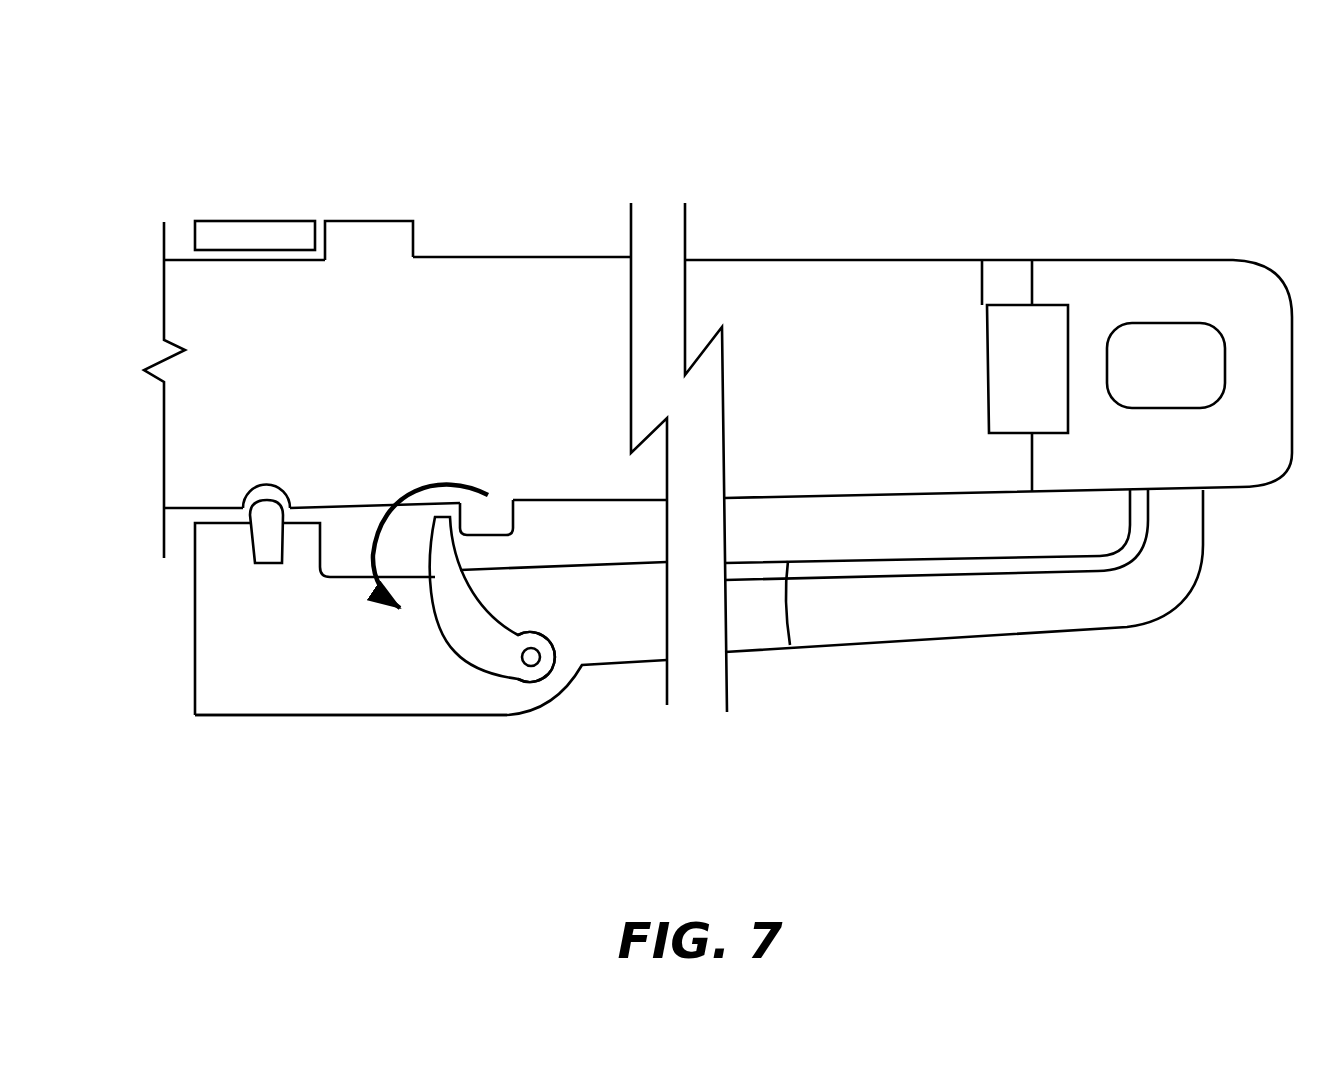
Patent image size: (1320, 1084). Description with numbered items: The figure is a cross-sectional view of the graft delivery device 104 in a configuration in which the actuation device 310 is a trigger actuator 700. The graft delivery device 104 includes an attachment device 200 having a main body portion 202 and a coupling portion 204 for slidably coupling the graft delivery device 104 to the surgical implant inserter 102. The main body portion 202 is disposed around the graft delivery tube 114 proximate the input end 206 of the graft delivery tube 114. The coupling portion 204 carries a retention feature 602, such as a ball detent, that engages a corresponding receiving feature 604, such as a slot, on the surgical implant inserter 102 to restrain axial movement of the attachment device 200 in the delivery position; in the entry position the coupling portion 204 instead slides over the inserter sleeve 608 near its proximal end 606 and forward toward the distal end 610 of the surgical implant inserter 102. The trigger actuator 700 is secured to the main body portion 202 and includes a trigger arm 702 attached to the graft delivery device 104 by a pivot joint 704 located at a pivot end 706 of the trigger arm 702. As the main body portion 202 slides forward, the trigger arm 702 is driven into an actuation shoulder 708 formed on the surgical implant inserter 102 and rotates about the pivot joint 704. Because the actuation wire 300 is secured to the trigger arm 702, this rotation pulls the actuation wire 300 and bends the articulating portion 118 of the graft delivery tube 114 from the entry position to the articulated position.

The surgical implant inserter 102 is at (718, 298).
The graft delivery device 104 is at (520, 703).
The graft delivery tube 114 is at (1007, 601).
The articulating portion 118 is at (1004, 607).
The attachment device 200 is at (520, 674).
The main body portion 202 is at (270, 695).
The coupling portion 204 is at (220, 563).
The input end 206 is at (378, 786).
The actuation wire 300 is at (623, 587).
The actuation device 310 is at (550, 722).
The retention feature 602 is at (268, 525).
The receiving feature 604 is at (266, 482).
The proximal end 606 is at (226, 180).
The inserter sleeve 608 is at (390, 180).
The distal end 610 is at (904, 226).
The trigger actuator 700 is at (521, 702).
The trigger arm 702 is at (457, 618).
The pivot joint 704 is at (529, 664).
The pivot end 706 is at (571, 691).
The actuation shoulder 708 is at (487, 512).